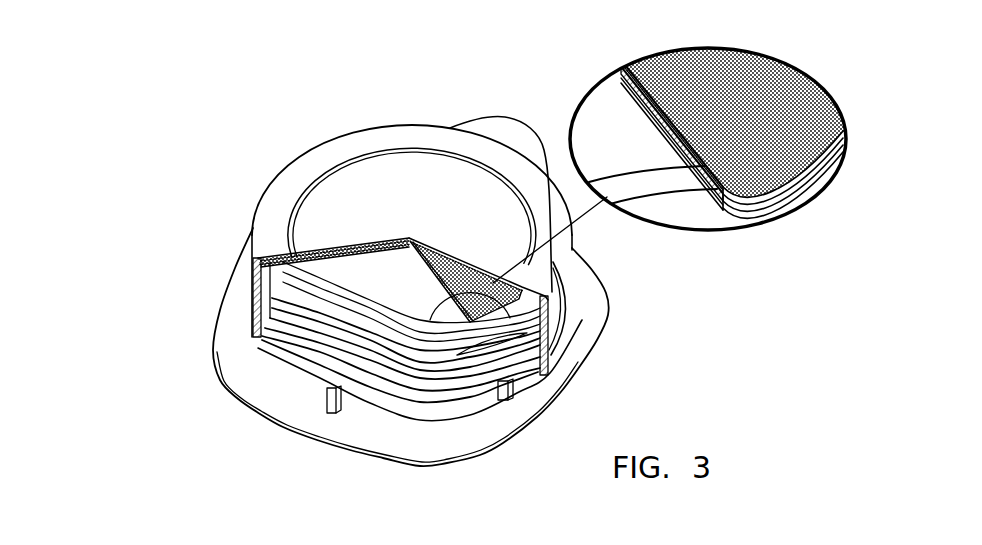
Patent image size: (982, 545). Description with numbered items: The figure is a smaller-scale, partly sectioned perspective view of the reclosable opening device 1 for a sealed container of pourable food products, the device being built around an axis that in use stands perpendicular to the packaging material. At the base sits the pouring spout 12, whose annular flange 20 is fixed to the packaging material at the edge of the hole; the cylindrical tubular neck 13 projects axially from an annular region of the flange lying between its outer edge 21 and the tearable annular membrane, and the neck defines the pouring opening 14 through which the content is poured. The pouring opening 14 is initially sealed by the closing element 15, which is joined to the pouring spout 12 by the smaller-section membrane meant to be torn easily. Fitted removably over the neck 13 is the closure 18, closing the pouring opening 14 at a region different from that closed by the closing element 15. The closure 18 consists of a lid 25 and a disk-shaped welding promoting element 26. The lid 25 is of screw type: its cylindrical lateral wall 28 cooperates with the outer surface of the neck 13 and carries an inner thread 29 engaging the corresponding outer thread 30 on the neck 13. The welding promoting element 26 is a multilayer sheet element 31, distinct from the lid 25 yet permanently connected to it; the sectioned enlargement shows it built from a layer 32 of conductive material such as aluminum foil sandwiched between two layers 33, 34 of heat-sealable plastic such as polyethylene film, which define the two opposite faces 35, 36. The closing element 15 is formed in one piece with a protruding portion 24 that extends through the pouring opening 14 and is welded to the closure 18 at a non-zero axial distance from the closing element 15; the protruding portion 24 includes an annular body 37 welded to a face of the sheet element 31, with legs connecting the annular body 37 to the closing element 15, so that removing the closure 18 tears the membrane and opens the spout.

The reclosable opening device 1 is at (207, 422).
The pouring spout 12 is at (358, 412).
The cylindrical tubular neck 13 is at (320, 357).
The pouring opening 14 is at (337, 306).
The closing element 15 is at (418, 305).
The closure 18 is at (413, 152).
The annular flange 20 is at (236, 358).
The outer edge 21 is at (524, 452).
The protruding portion 24 is at (370, 291).
The lid 25 is at (258, 200).
The welding promoting element 26 is at (444, 254).
The cylindrical lateral wall 28 is at (258, 292).
The inner thread 29 is at (545, 318).
The outer thread 30 is at (527, 390).
The multilayer sheet element 31 is at (474, 256).
The layer of conductive material 32 is at (735, 193).
The layer of heat-sealable plastic material 33 is at (652, 82).
The layer of heat-sealable plastic material 34 is at (685, 168).
The face 35 is at (746, 85).
The face 36 is at (627, 116).
The annular body 37 is at (400, 290).